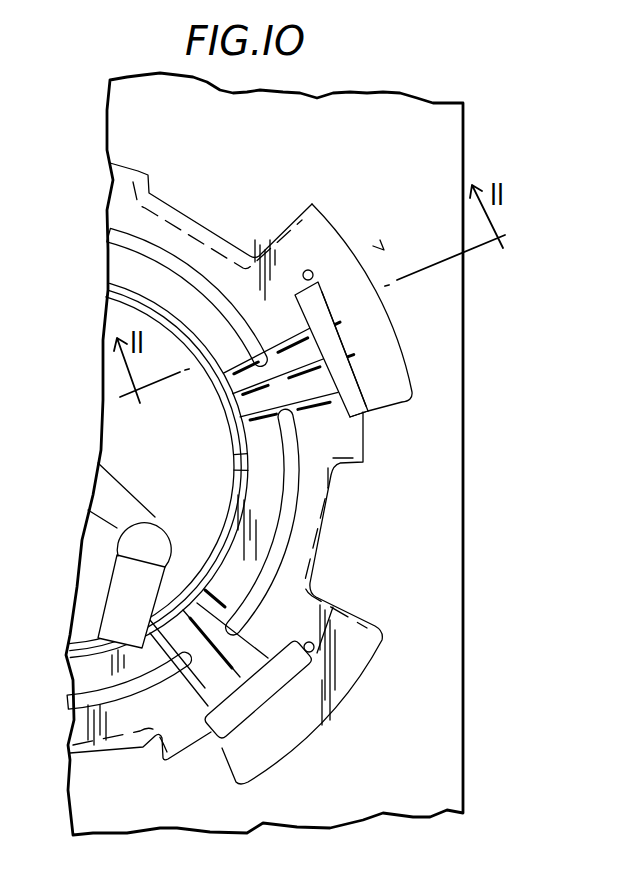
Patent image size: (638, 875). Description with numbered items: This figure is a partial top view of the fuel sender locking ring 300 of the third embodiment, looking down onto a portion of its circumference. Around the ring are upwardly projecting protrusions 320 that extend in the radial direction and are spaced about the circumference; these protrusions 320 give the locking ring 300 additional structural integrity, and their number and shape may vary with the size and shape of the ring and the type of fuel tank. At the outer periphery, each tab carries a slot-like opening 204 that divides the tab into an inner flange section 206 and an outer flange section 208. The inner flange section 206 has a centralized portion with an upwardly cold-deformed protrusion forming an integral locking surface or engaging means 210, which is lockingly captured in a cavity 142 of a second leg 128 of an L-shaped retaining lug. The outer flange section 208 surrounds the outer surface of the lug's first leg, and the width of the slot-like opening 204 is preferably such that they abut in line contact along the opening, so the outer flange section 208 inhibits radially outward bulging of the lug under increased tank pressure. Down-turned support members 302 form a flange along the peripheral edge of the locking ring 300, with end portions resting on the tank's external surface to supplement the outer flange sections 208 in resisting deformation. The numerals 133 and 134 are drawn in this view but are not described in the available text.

The second leg 128 is at (360, 407).
The rod with rounded head 133 is at (152, 538).
The inner ring 134 is at (188, 322).
The cavity 142 is at (343, 350).
The slot-like opening 204 is at (308, 272).
The inner flange section 206 is at (353, 442).
The outer flange section 208 is at (362, 297).
The locking surface or engaging means 210 is at (298, 392).
The locking ring 300 is at (382, 232).
The support members 302 is at (343, 490).
The protrusions 320 is at (163, 243).